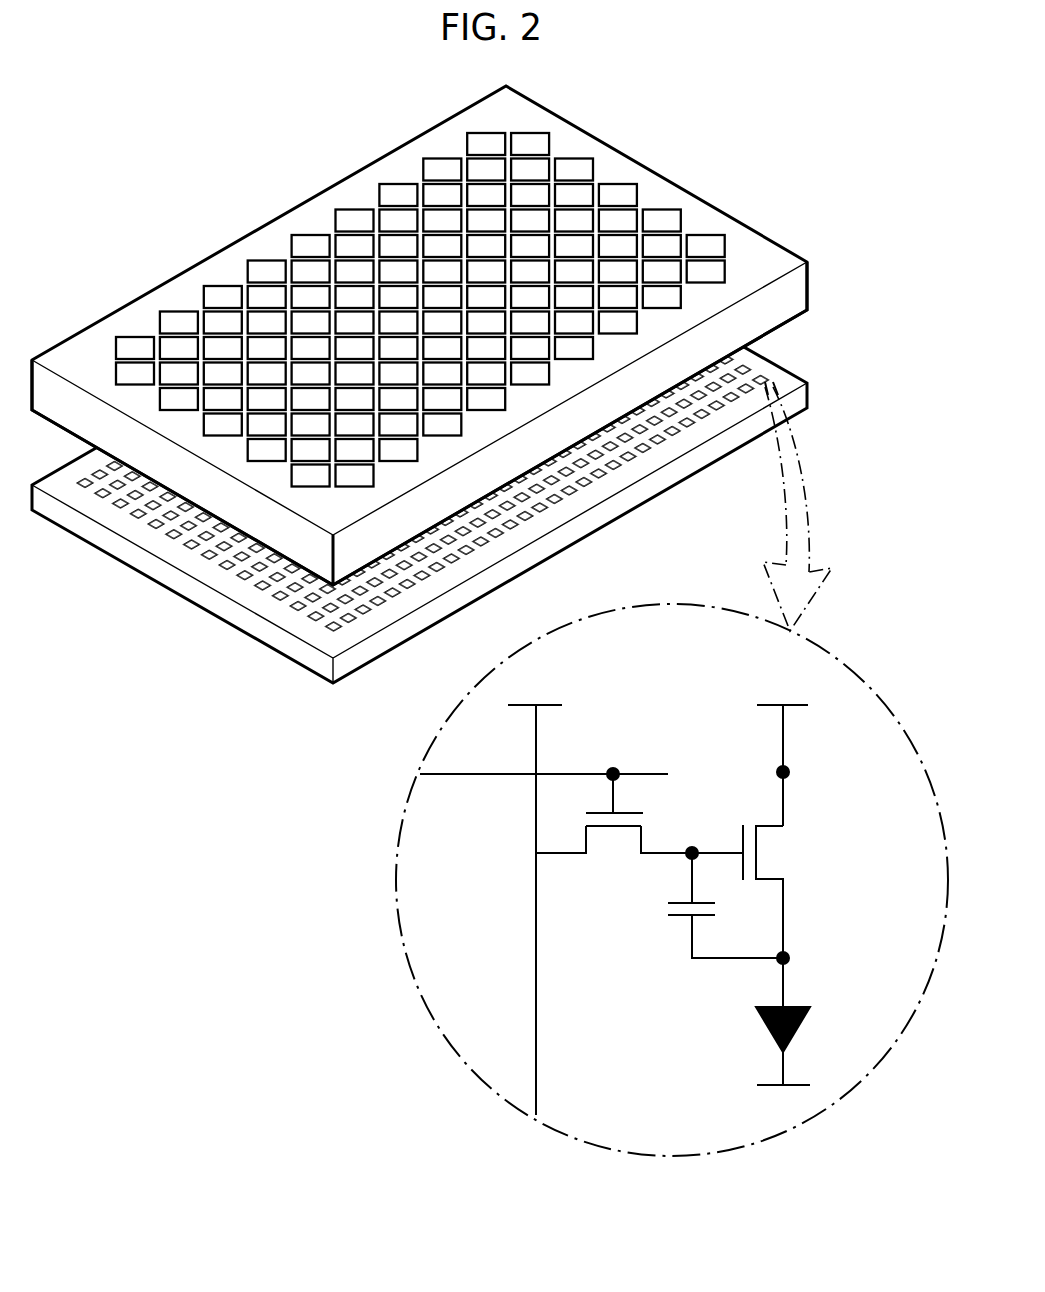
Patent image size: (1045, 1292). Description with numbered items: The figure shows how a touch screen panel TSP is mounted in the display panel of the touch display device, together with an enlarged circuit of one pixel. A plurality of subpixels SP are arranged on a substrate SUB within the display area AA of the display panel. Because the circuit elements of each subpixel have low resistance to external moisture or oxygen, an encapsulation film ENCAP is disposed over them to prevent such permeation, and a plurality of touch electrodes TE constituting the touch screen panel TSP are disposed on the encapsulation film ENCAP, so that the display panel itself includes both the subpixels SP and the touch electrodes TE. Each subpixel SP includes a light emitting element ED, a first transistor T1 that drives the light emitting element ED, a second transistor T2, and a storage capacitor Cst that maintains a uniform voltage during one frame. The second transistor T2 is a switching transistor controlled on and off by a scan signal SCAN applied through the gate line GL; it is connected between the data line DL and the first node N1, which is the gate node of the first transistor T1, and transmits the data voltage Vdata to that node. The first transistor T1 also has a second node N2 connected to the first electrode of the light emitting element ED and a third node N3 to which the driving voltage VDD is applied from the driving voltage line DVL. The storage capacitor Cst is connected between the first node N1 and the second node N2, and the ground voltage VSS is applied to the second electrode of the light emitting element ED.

The display area AA is at (78, 114).
The touch screen panel TSP is at (264, 200).
The touch electrode TE is at (704, 234).
The encapsulation film ENCAP is at (808, 288).
The subpixel SP is at (766, 376).
The substrate SUB is at (808, 398).
The data voltage Vdata is at (537, 688).
The data line DL is at (519, 910).
The gate line GL is at (544, 796).
The scan signal SCAN is at (615, 772).
The second transistor T2 is at (614, 845).
The first node N1 is at (711, 834).
The storage capacitor Cst is at (725, 905).
The first transistor T1 is at (773, 891).
The driving voltage VDD is at (782, 688).
The driving voltage line DVL is at (757, 765).
The third node N3 is at (800, 774).
The second node N2 is at (800, 960).
The light emitting element ED is at (767, 1021).
The ground voltage VSS is at (783, 1103).